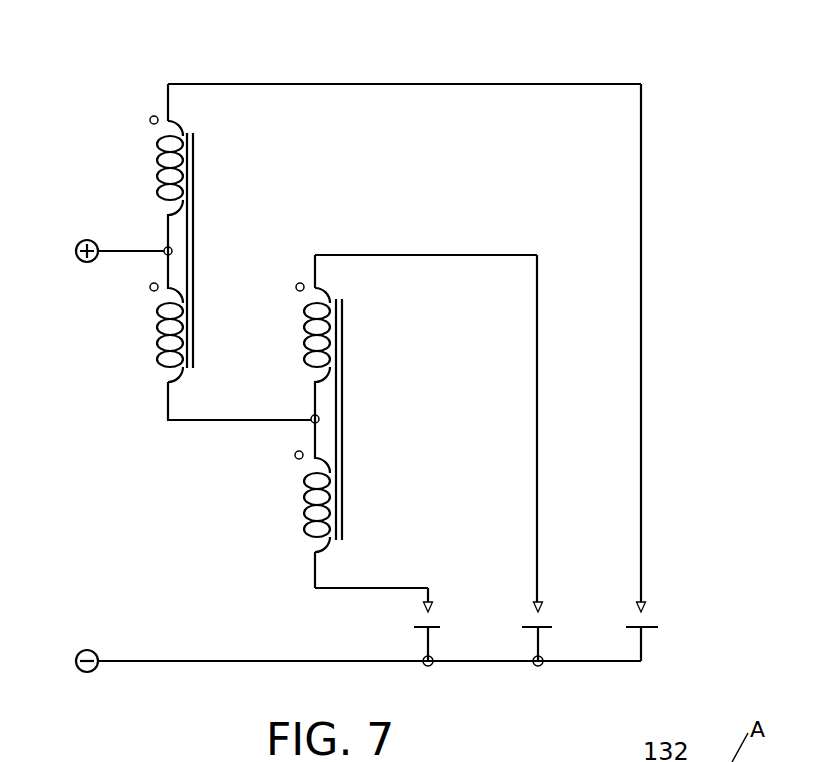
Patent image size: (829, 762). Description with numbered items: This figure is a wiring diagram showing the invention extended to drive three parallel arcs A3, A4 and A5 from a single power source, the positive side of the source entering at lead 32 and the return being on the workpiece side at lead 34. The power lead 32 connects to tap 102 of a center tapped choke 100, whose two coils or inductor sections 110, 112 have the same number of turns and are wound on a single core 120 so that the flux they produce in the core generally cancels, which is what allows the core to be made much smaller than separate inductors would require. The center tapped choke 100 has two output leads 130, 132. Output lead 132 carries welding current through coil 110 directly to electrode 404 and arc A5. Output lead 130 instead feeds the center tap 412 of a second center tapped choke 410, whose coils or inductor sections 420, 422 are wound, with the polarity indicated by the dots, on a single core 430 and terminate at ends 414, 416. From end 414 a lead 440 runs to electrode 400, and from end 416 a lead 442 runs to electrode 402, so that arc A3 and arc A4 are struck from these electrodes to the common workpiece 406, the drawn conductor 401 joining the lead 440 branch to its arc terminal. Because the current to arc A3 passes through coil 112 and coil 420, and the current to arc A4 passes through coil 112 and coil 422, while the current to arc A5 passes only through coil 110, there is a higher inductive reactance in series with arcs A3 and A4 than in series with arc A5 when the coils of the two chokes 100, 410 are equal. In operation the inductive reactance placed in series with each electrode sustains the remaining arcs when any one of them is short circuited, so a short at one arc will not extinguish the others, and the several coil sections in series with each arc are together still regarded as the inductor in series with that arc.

The lead 32 is at (121, 250).
The negative input terminal 34 is at (140, 660).
The center tapped choke 100 is at (177, 233).
The tap 102 is at (165, 248).
The coil 110 is at (155, 153).
The coil 112 is at (153, 320).
The core 120 is at (197, 213).
The output lead 130 is at (212, 421).
The output lead 132 is at (452, 84).
The electrode 400 is at (568, 80).
The conductor 401 is at (412, 587).
The electrode 402 is at (538, 433).
The electrode 404 is at (642, 333).
The workpiece 406 is at (485, 662).
The second center tapped choke 410 is at (416, 382).
The center tap 412 is at (312, 416).
The end 414 is at (313, 572).
The end 416 is at (317, 268).
The coil 420 is at (303, 523).
The coil 422 is at (303, 322).
The single core 430 is at (343, 390).
The lead 440 is at (353, 587).
The lead 442 is at (487, 255).
The arc A3 is at (437, 613).
The arc A4 is at (548, 613).
The arc A5 is at (653, 613).